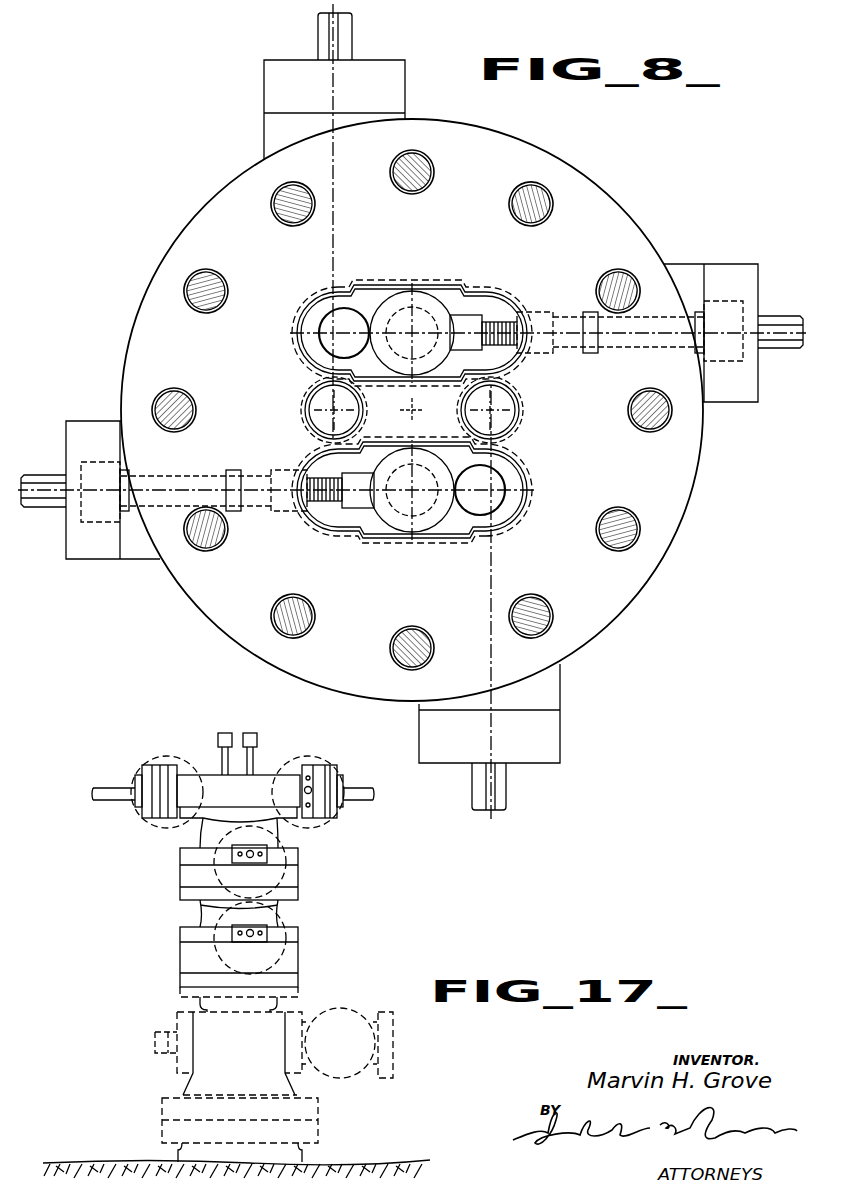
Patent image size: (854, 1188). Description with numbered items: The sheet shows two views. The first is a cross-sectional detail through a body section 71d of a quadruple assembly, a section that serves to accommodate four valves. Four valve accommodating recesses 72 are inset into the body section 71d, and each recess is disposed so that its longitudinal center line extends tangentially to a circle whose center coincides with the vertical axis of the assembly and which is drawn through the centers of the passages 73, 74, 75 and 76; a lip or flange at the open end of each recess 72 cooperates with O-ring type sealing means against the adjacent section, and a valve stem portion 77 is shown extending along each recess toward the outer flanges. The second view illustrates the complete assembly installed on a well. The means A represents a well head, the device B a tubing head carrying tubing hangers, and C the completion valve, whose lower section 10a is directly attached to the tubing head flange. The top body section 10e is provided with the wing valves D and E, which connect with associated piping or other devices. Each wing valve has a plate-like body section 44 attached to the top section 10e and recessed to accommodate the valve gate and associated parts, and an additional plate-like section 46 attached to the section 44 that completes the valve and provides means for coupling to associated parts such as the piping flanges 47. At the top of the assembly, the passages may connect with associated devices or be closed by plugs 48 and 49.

In FIG. 8, the body section 71d is at (202, 223).
In FIG. 8, the valve accommodating recess 72 is at (457, 300).
In FIG. 8, the passage 73 is at (312, 408).
In FIG. 8, the passage 74 is at (421, 506).
In FIG. 8, the passage 75 is at (510, 407).
In FIG. 8, the passage 76 is at (412, 316).
In FIG. 8, the operating stem 77 is at (502, 305).
In FIG. 17, the top body section 10e is at (266, 776).
In FIG. 17, the lower section 10a is at (186, 962).
In FIG. 17, the body section 44 is at (169, 822).
In FIG. 17, the plate-like section 46 is at (151, 822).
In FIG. 17, the piping flange 47 is at (338, 773).
In FIG. 17, the plug 48 is at (219, 738).
In FIG. 17, the plug 49 is at (250, 734).
In FIG. 17, the well head A is at (320, 1126).
In FIG. 17, the tubing head B is at (306, 1006).
In FIG. 17, the completion valve C is at (302, 897).
In FIG. 17, the wing valve D is at (155, 758).
In FIG. 17, the wing valve E is at (333, 758).